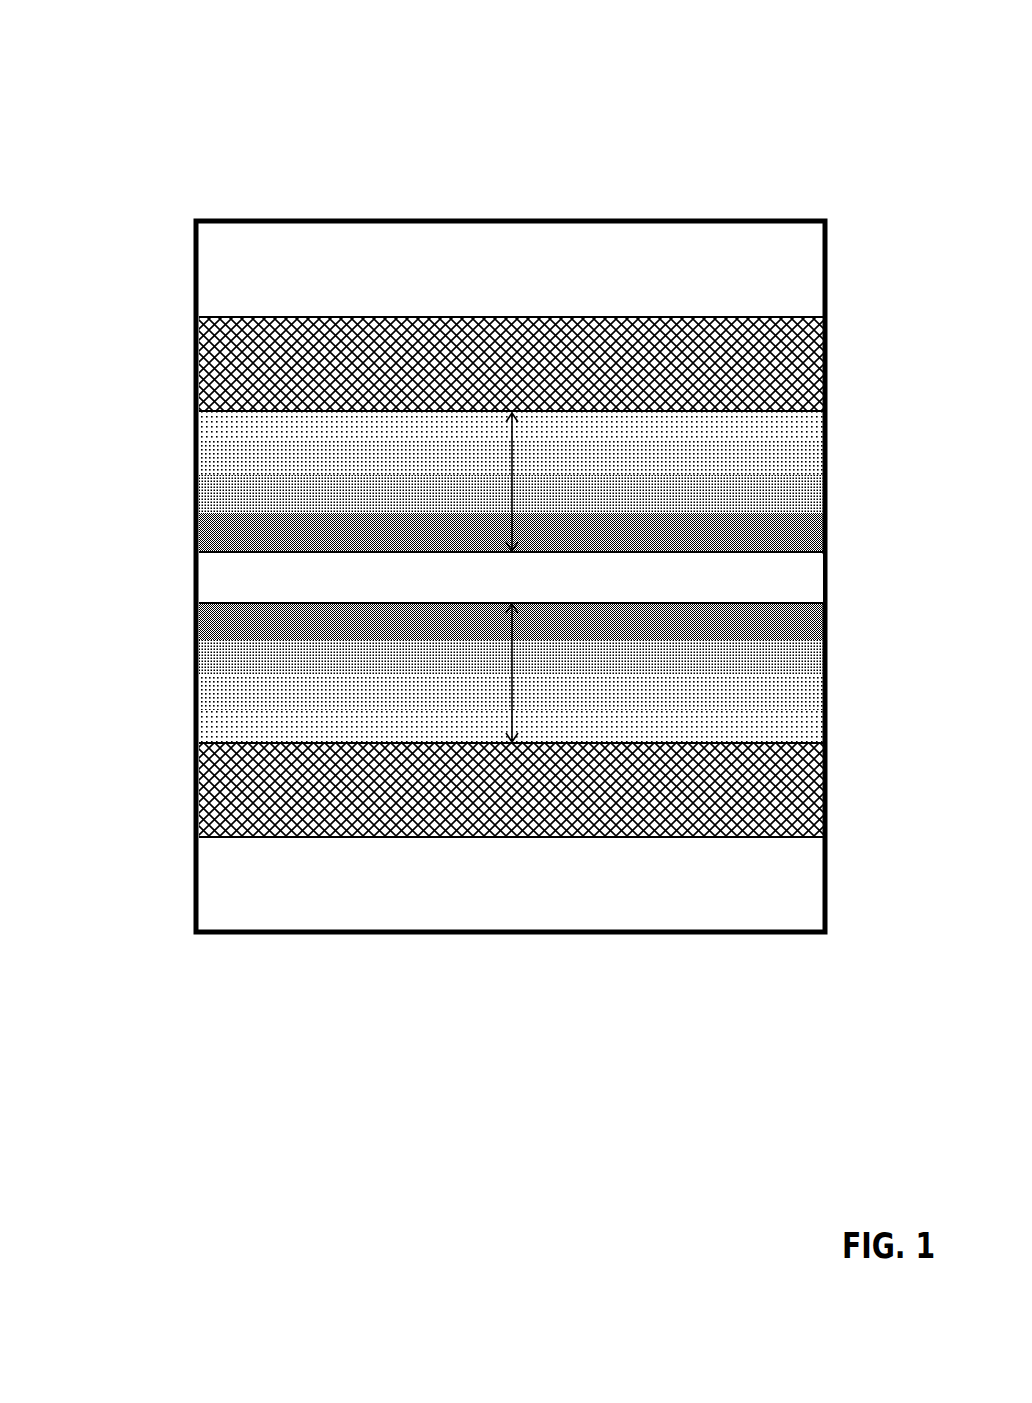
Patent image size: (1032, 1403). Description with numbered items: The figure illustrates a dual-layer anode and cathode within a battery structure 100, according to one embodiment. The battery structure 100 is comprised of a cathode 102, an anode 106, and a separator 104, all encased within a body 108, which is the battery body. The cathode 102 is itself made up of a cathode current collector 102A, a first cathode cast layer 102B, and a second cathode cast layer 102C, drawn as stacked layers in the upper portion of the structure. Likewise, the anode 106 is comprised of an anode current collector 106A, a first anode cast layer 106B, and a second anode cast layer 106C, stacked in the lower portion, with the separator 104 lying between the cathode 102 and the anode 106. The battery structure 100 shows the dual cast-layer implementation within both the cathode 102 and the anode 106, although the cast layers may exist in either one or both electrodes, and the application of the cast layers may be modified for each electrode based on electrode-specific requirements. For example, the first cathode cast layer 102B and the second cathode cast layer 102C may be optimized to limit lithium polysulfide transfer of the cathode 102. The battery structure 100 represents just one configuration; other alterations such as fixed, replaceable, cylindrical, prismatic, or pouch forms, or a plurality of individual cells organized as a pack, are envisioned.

The battery structure 100 is at (84, 100).
The cathode 102 is at (162, 393).
The cathode current collector 102A is at (511, 270).
The first cathode cast layer 102B is at (511, 364).
The second cathode cast layer 102C is at (511, 482).
The separator 104 is at (511, 578).
The anode 106 is at (162, 762).
The anode current collector 106A is at (510, 884).
The first anode cast layer 106B is at (511, 790).
The second anode cast layer 106C is at (511, 673).
The body 108 is at (767, 178).